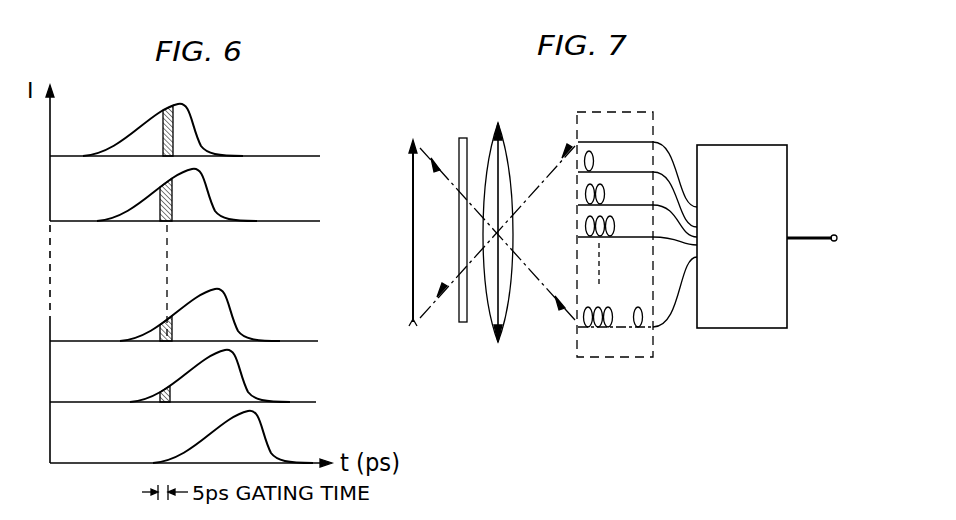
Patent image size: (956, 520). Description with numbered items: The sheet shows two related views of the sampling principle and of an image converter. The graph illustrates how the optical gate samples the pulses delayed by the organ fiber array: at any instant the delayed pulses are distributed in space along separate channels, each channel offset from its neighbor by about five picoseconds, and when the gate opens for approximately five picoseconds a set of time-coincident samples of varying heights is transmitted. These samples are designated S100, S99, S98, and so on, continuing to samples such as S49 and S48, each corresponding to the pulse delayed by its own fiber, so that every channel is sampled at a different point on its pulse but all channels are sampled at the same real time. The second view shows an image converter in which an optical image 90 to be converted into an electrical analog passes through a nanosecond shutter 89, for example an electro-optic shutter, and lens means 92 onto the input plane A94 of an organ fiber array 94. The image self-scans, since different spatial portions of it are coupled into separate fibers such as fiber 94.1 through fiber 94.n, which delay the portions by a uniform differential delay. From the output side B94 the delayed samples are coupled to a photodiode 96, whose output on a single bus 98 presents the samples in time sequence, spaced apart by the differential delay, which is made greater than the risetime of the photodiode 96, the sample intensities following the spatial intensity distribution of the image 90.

In FIG. 6, the sample S48 is at (163, 122).
In FIG. 6, the sample S49 is at (161, 196).
In FIG. 6, the sample S98 is at (166, 332).
In FIG. 6, the sample S99 is at (165, 397).
In FIG. 6, the sample S100 is at (165, 461).
In FIG. 7, the nanosecond shutter 89 is at (463, 138).
In FIG. 7, the optical image 90 is at (412, 163).
In FIG. 7, the lens means 92 is at (499, 124).
In FIG. 7, the organ fiber array 94 is at (637, 215).
In FIG. 7, the fiber of organ fiber array 94.1 is at (609, 134).
In FIG. 7, the fiber of organ fiber array 94.n is at (616, 296).
In FIG. 7, the input plane A94 is at (576, 342).
In FIG. 7, the output plane B94 is at (653, 342).
In FIG. 7, the photodiode 96 is at (735, 145).
In FIG. 7, the single bus 98 is at (832, 234).